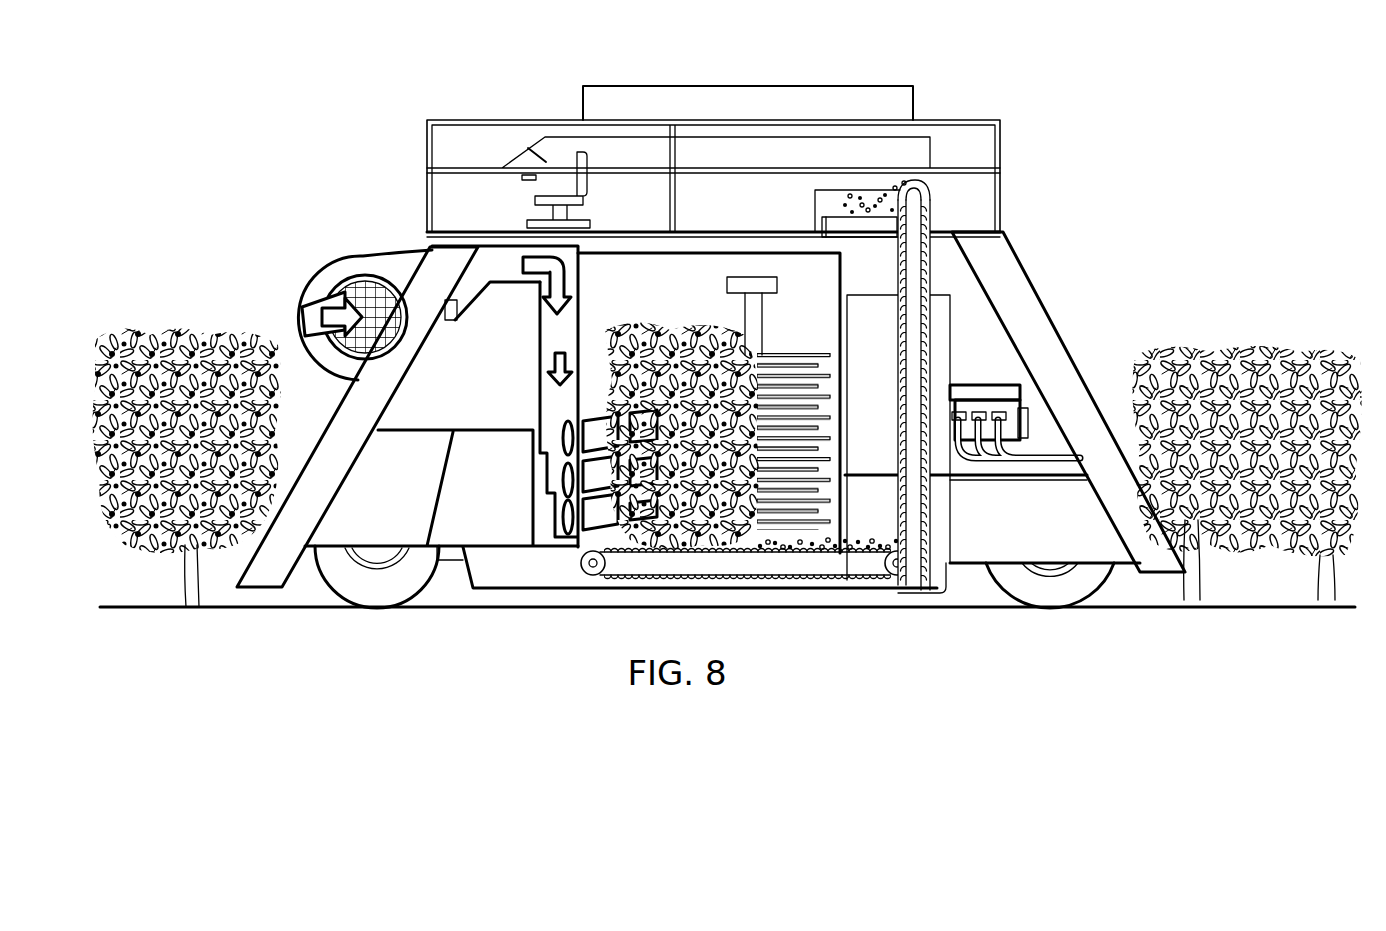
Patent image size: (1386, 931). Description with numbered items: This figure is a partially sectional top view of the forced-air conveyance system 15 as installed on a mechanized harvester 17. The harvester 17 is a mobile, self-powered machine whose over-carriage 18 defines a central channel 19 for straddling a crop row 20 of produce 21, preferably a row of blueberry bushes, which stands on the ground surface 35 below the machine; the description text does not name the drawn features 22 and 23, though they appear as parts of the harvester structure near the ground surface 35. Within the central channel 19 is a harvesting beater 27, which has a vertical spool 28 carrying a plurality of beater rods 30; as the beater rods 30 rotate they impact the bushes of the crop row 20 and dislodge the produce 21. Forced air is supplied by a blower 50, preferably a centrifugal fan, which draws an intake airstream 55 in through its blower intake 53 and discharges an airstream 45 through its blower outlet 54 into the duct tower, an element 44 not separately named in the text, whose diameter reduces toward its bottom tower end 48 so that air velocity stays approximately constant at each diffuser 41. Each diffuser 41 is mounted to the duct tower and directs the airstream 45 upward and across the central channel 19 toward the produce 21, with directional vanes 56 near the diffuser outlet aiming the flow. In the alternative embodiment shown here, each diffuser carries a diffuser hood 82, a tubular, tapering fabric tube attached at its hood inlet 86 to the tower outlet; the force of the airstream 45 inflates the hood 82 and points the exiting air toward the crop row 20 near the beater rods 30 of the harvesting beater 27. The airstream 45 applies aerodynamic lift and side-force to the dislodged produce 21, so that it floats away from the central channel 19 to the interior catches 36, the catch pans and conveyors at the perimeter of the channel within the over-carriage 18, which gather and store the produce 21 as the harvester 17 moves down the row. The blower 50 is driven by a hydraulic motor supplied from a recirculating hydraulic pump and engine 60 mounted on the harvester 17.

The forced-air conveyance system 15 is at (340, 142).
The mechanized harvester 17 is at (782, 76).
The over-carriage 18 is at (985, 277).
The central channel 19 is at (323, 424).
The crop row 20 is at (162, 304).
The produce 21 is at (170, 336).
The front support leg 22 is at (322, 488).
The rear wheel chassis 23 is at (1115, 550).
The harvesting beater 27 is at (742, 285).
The vertical spool 28 is at (752, 556).
The beater rods 30 is at (792, 530).
The ground surface 35 is at (180, 596).
The interior catches 36 is at (878, 545).
The diffuser 41 is at (497, 542).
The air duct 44 is at (545, 413).
The airstream 45 is at (542, 375).
The bottom tower end 48 is at (513, 575).
The blower 50 is at (365, 258).
The blower intake 53 is at (345, 290).
The blower outlet 54 is at (432, 257).
The intake airstream 55 is at (300, 316).
The directional vanes 56 is at (623, 380).
The recirculating hydraulic pump and engine 60 is at (1020, 385).
The diffuser hood 82 is at (597, 505).
The hood inlet 86 is at (570, 437).